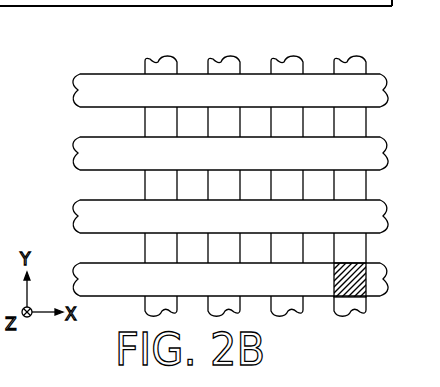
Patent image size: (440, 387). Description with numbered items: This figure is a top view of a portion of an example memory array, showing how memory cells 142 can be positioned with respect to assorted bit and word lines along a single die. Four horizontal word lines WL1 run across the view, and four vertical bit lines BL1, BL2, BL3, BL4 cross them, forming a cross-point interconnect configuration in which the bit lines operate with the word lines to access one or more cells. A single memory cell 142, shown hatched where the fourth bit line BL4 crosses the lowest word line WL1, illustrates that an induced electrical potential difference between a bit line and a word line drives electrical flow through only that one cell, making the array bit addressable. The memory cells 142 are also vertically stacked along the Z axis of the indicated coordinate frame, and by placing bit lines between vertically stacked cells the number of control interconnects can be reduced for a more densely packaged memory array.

The memory cell 142 is at (330, 291).
The word line WL1 is at (230, 185).
The bit line BL1 is at (158, 58).
The bit line BL2 is at (221, 58).
The bit line BL3 is at (284, 58).
The bit line BL4 is at (347, 58).